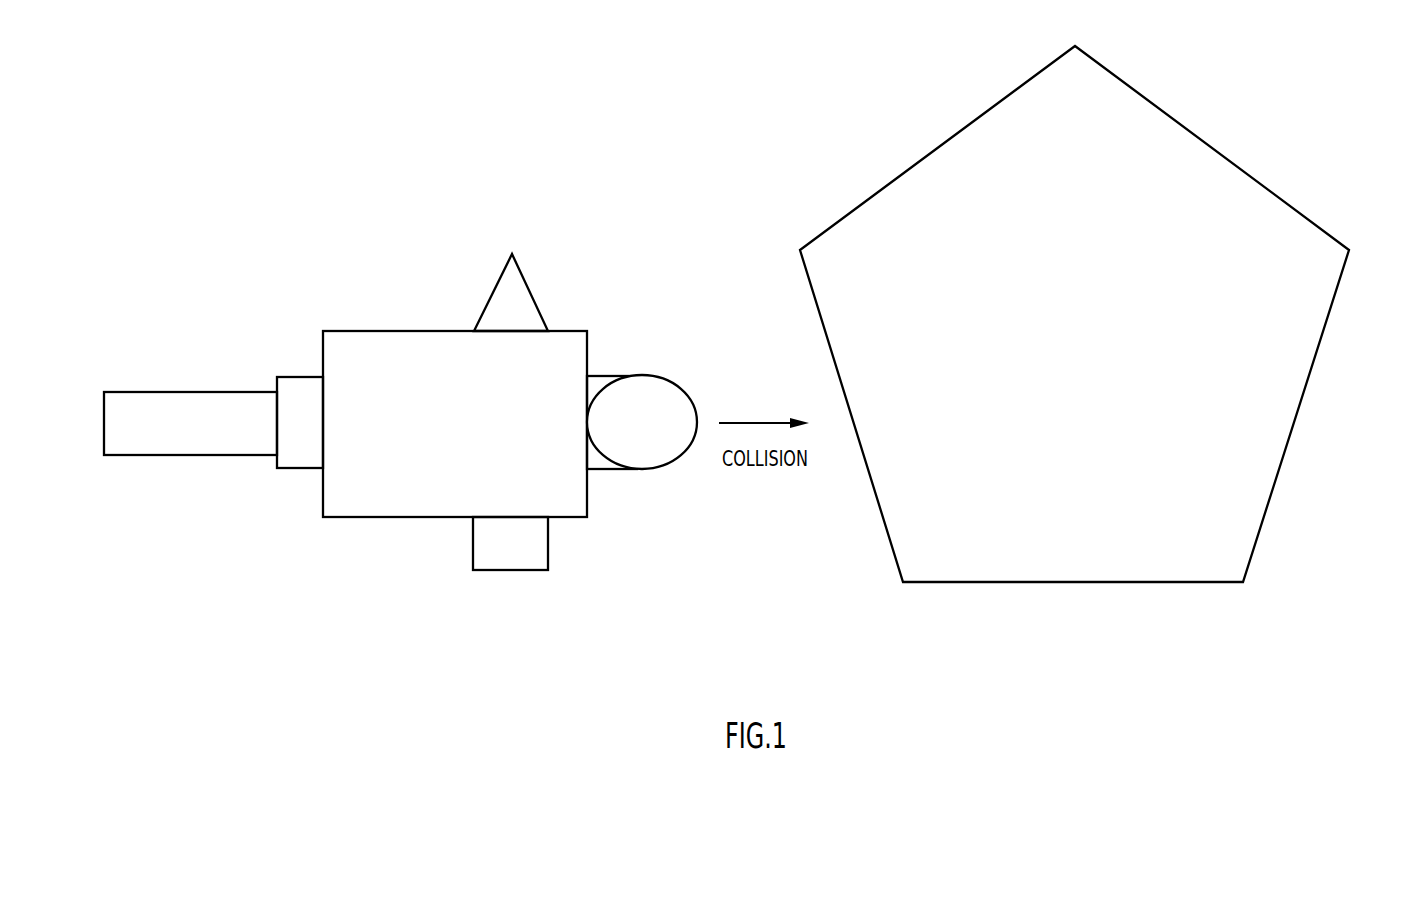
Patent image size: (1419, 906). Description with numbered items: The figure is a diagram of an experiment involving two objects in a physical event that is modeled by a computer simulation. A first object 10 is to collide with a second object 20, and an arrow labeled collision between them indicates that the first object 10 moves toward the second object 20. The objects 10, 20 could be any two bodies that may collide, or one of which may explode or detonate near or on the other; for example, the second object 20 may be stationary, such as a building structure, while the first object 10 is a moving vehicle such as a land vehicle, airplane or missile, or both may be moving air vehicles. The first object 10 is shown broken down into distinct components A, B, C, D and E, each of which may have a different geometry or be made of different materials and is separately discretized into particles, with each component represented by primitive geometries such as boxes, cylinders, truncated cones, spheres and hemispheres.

The first object 10 is at (400, 441).
The second object 20 is at (1303, 522).
The object component A is at (455, 424).
The object component B is at (213, 422).
The object component C is at (511, 292).
The object component D is at (510, 543).
The object component E is at (642, 422).